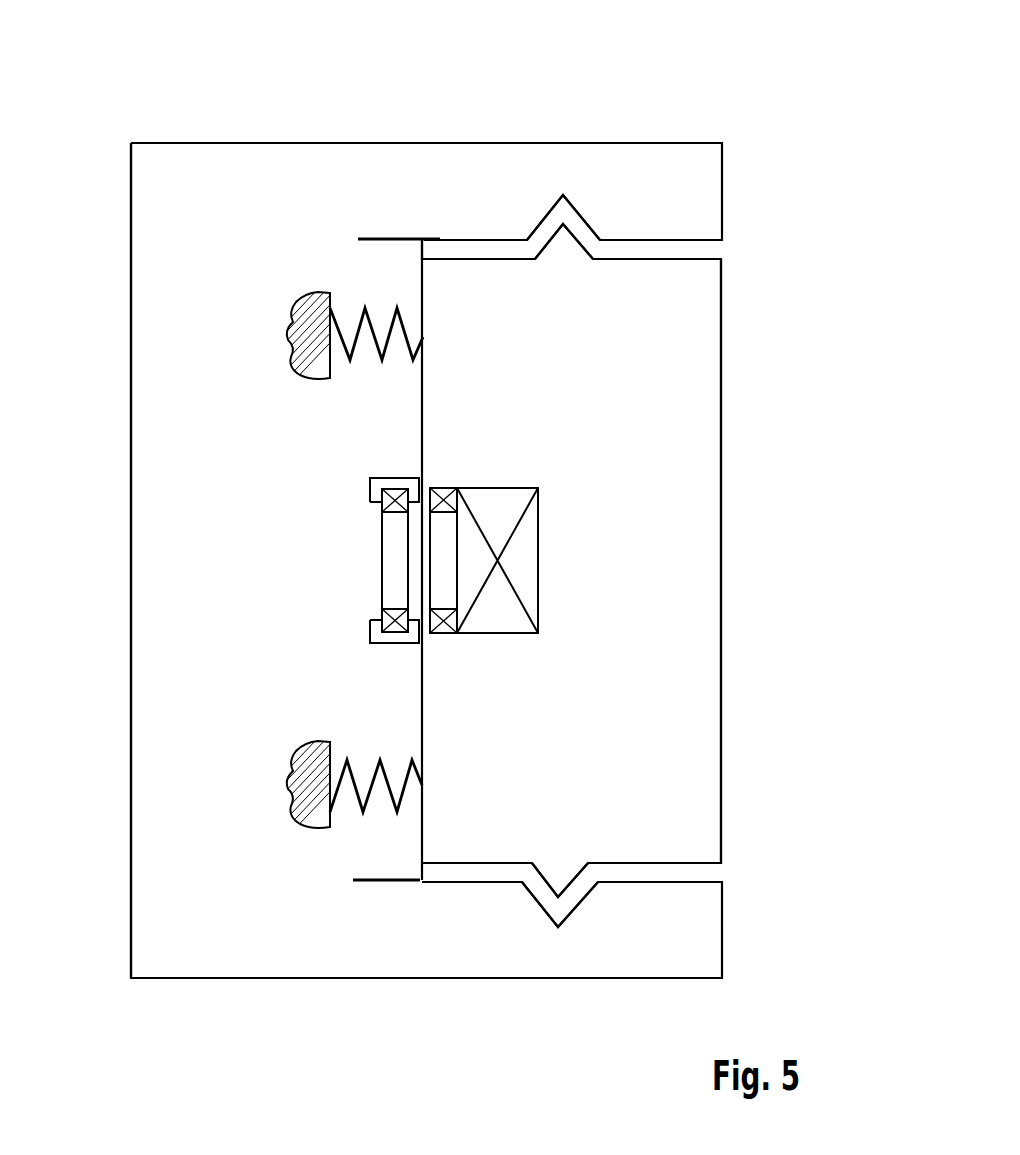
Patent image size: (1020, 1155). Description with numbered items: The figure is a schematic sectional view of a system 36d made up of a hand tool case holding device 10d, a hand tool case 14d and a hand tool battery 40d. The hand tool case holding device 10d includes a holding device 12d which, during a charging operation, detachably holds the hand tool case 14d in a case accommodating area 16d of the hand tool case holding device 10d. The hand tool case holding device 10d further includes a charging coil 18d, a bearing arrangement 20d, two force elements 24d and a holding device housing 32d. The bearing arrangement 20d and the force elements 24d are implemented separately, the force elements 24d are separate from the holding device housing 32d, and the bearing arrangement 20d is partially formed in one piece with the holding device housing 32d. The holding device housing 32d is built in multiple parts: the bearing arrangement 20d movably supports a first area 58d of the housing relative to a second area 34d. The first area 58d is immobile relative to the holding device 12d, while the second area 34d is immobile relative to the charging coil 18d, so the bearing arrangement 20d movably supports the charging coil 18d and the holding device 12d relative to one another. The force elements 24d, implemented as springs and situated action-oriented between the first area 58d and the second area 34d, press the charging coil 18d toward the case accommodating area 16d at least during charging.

The hand tool case holding device 10d is at (222, 163).
The holding device 12d is at (563, 177).
The hand tool case 14d is at (700, 298).
The case accommodating area 16d is at (738, 382).
The charging coil 18d is at (357, 558).
The bearing arrangement 20d is at (426, 221).
The force elements 24d is at (353, 294).
The holding device housing 32d is at (131, 362).
The second area 34d is at (422, 425).
The system 36d is at (684, 73).
The hand tool battery 40d is at (522, 558).
The first area 58d is at (443, 240).